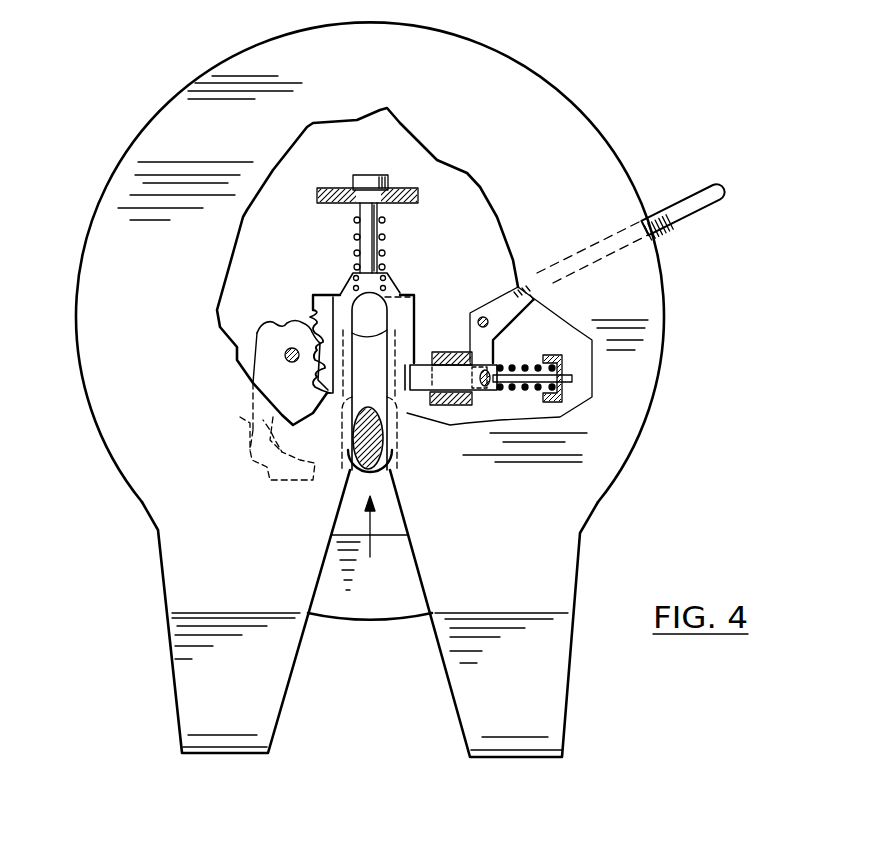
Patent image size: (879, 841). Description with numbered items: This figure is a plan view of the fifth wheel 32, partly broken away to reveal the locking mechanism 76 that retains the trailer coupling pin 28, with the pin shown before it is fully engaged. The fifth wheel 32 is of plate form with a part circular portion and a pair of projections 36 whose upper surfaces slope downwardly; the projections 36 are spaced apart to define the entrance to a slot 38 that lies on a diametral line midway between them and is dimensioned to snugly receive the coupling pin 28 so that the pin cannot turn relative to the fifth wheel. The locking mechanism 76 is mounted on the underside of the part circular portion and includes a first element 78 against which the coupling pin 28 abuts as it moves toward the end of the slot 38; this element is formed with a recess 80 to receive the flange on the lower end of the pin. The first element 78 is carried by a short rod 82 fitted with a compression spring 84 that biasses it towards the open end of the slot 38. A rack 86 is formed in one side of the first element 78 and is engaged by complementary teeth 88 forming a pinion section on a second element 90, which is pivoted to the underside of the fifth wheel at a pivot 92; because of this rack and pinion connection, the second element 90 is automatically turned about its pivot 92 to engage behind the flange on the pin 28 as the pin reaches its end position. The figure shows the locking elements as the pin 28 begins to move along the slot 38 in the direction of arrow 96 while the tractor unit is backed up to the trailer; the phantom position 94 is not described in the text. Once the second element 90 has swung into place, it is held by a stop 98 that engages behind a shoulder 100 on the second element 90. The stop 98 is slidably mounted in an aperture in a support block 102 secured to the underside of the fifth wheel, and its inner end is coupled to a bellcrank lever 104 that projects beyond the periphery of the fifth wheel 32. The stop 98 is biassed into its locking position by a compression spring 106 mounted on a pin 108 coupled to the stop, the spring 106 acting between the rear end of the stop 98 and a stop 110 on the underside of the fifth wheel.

The coupling pin 28 is at (363, 445).
The fifth wheel 32 is at (553, 107).
The projections 36 is at (370, 613).
The slot 38 is at (347, 297).
The locking mechanism 76 is at (458, 266).
The first element 78 is at (338, 290).
The recess 80 is at (388, 340).
The short rod 82 is at (385, 220).
The compression spring 84 is at (385, 251).
The rack 86 is at (312, 316).
The teeth 88 is at (288, 318).
The second element 90 is at (240, 417).
The pivot 92 is at (285, 351).
The lever arm 94 is at (252, 448).
The arrow 96 is at (370, 557).
The stop 98 is at (443, 383).
The shoulder 100 is at (414, 418).
The support block 102 is at (480, 397).
The bellcrank lever 104 is at (707, 202).
The compression spring 106 is at (527, 366).
The pin 108 is at (573, 380).
The stop 110 is at (563, 357).